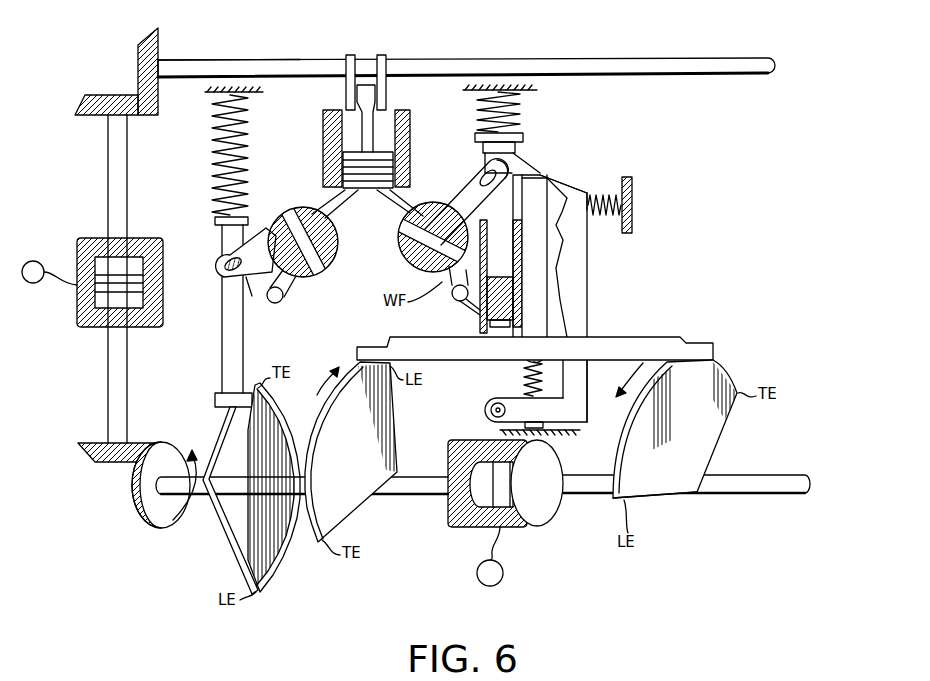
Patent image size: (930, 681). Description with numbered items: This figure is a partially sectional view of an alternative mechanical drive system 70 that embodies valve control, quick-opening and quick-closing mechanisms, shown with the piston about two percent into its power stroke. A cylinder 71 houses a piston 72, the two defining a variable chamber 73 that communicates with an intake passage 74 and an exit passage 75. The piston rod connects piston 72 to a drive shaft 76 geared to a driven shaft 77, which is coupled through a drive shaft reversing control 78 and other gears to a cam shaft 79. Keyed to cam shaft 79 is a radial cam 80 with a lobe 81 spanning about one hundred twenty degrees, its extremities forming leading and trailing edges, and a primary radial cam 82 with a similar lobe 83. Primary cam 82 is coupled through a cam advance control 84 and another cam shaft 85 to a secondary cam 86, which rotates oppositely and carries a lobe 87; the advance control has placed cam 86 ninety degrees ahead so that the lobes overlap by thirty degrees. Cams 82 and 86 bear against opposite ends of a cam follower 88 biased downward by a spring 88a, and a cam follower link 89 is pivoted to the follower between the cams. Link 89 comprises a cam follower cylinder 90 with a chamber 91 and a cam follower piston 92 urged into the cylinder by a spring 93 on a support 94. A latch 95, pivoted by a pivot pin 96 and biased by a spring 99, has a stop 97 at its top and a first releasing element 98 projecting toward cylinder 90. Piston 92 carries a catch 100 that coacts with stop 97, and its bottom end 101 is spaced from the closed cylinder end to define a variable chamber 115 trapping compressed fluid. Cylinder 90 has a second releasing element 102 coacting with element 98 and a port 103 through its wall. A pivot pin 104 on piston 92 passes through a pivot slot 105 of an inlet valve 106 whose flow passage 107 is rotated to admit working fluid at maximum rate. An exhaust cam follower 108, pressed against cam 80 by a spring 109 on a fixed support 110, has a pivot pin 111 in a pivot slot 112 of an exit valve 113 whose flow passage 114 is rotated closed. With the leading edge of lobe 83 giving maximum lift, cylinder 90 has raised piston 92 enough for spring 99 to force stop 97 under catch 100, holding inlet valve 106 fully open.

The mechanical drive system 70 is at (527, 51).
The cylinder 71 is at (327, 150).
The piston 72 is at (381, 153).
The variable chamber 73 is at (333, 272).
The intake passage 74 is at (388, 199).
The exit passage 75 is at (300, 208).
The drive shaft 76 is at (271, 62).
The driven shaft 77 is at (108, 183).
The drive shaft reversing control 78 is at (73, 325).
The cam shaft 79 is at (185, 512).
The radial cam 80 is at (227, 549).
The lobe 81 is at (267, 598).
The primary radial cam 82 is at (402, 440).
The lobe 83 is at (316, 394).
The cam advance control 84 is at (532, 533).
The cam shaft 85 is at (585, 496).
The secondary cam 86 is at (683, 506).
The lobe 87 is at (615, 437).
The cam follower 88 is at (612, 344).
The spring 88a is at (524, 372).
The cam follower link 89 is at (530, 300).
The cam follower cylinder 90 is at (503, 261).
The chamber 91 is at (480, 308).
The cam follower piston 92 is at (514, 150).
The spring 93 is at (521, 111).
The support 94 is at (537, 89).
The latch 95 is at (592, 189).
The pivot pin 96 is at (496, 406).
The stop 97 is at (546, 178).
The first releasing element 98 is at (548, 255).
The spring 99 is at (633, 210).
The catch 100 is at (562, 175).
The bottom end 101 is at (483, 330).
The second releasing element 102 is at (552, 227).
The port 103 is at (463, 310).
The pivot pin 104 is at (494, 163).
The pivot slot 105 is at (487, 176).
The inlet valve 106 is at (447, 218).
The flow passage 107 is at (430, 262).
The exhaust cam follower 108 is at (222, 318).
The spring 109 is at (212, 153).
The fixed support 110 is at (258, 91).
The pivot pin 111 is at (214, 256).
The pivot slot 112 is at (222, 266).
The exit valve 113 is at (247, 283).
The flow passage 114 is at (296, 279).
The variable chamber 115 is at (495, 318).